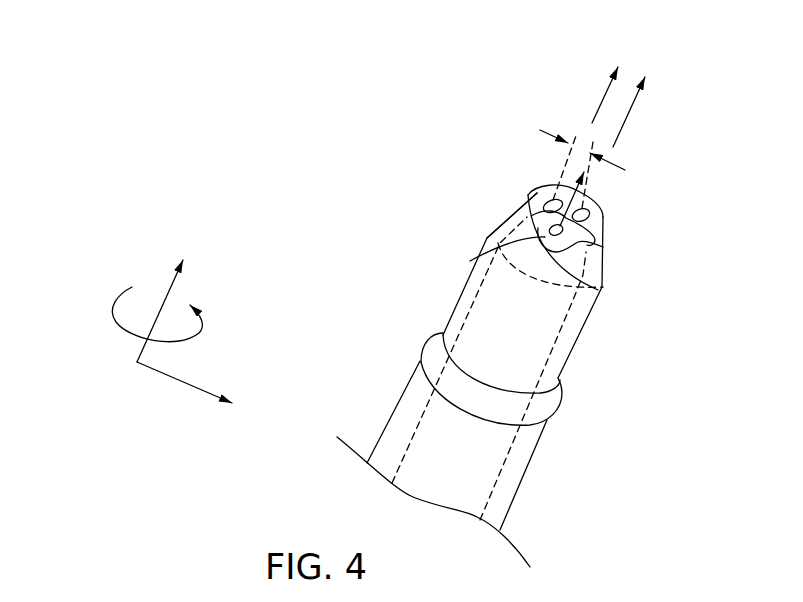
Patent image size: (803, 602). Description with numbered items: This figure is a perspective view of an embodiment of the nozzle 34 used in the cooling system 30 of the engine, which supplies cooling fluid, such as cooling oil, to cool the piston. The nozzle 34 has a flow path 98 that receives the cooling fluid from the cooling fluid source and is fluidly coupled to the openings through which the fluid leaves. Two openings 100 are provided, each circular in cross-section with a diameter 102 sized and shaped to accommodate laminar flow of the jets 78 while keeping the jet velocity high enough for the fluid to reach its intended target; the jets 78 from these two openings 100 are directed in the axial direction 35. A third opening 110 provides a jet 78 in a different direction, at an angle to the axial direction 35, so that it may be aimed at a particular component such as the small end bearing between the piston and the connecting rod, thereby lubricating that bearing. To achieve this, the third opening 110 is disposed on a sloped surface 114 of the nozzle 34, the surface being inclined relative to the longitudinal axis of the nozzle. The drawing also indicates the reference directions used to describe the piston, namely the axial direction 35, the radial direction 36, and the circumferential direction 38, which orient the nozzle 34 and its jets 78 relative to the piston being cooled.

The cooling system 30 is at (662, 150).
The nozzle 34 is at (480, 204).
The axial axis or direction 35 is at (167, 293).
The radial axis or direction 36 is at (177, 381).
The circumferential axis or direction 38 is at (118, 318).
The jet of cooling fluid 78 is at (625, 117).
The flow path 98 is at (569, 352).
The openings 100 is at (532, 203).
The diameter 102 is at (547, 128).
The third opening 110 is at (603, 287).
The sloped surface 114 is at (498, 257).